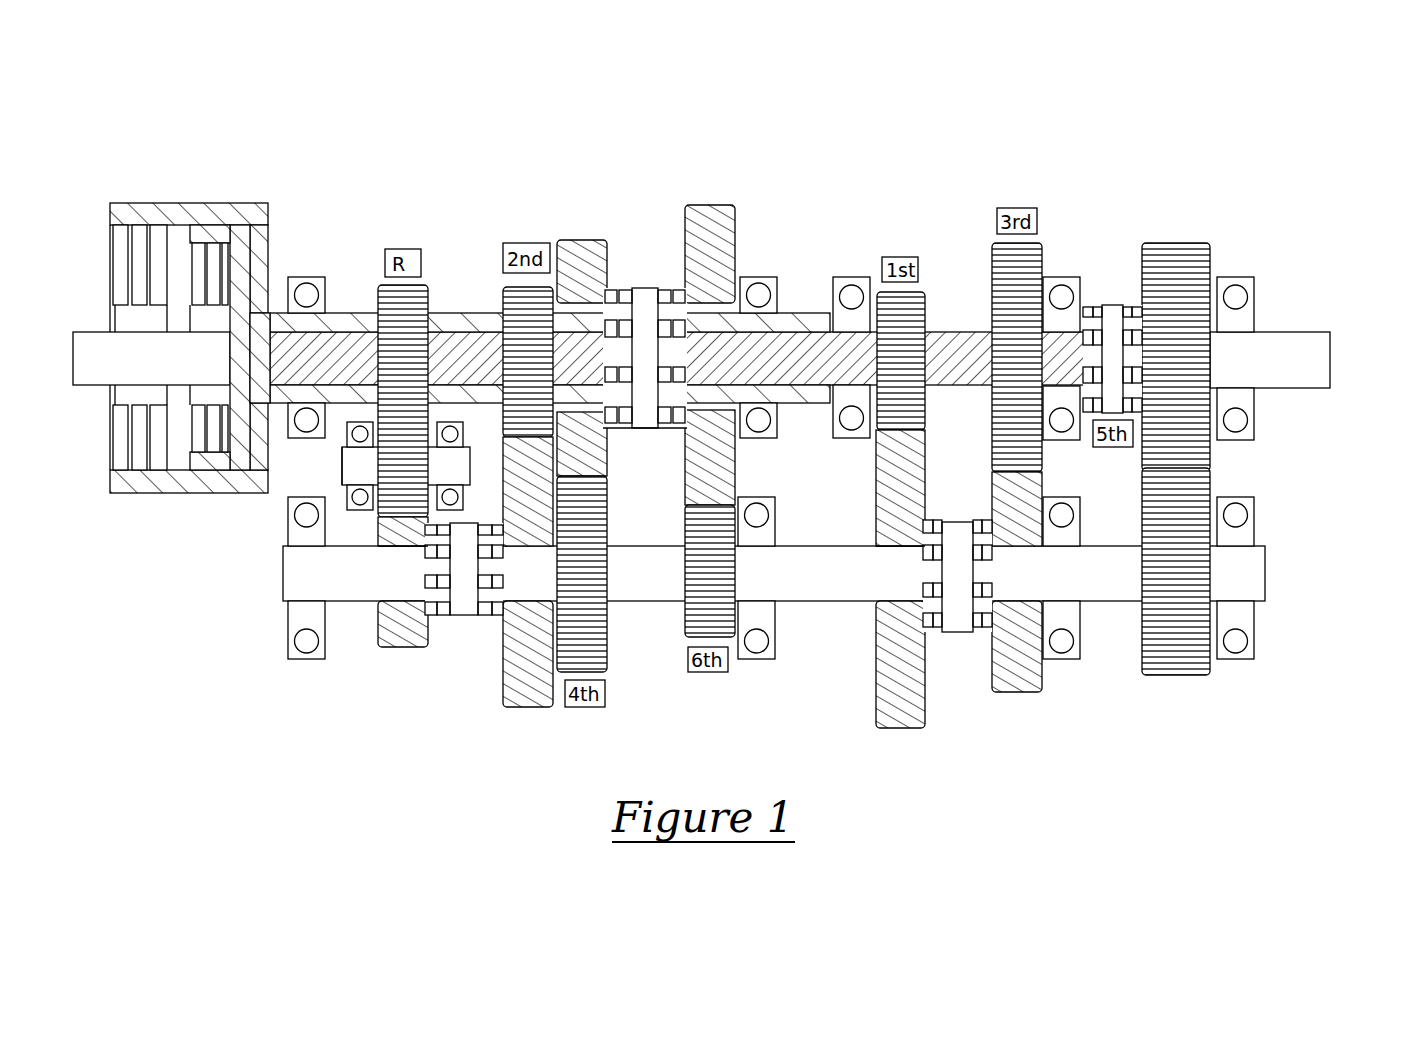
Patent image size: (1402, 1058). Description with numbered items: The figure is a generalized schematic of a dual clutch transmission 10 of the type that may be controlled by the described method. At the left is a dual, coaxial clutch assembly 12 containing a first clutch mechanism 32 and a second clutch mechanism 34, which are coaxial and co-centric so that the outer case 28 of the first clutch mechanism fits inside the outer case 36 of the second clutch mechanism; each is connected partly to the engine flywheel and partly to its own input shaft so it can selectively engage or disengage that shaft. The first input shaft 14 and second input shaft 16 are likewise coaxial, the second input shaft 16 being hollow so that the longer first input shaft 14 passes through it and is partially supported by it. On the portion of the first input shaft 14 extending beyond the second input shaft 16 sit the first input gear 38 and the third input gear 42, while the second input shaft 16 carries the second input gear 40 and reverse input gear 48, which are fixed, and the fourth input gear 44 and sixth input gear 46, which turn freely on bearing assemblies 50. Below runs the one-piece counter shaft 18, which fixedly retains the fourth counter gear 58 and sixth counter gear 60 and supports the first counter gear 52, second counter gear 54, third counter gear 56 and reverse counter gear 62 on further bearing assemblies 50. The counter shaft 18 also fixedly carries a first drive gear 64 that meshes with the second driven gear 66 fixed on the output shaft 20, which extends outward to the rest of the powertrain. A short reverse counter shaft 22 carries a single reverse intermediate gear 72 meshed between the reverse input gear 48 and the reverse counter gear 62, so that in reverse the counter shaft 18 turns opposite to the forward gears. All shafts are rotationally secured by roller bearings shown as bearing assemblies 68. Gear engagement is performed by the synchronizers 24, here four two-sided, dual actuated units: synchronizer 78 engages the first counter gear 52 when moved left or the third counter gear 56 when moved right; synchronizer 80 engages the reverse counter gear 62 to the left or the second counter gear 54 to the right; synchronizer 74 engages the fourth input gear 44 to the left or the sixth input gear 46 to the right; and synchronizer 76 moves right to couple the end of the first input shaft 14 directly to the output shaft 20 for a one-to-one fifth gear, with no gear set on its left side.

The dual clutch transmission 10 is at (497, 185).
The dual, coaxial clutch assembly 12 is at (211, 293).
The first input shaft 14 is at (963, 336).
The second input shaft 16 is at (326, 323).
The counter shaft 18 is at (292, 573).
The output shaft 20 is at (1332, 356).
The reverse counter shaft 22 is at (345, 470).
The synchronizers 24 is at (668, 276).
The outer case of the first clutch mechanism 28 is at (247, 262).
The first clutch mechanism 32 is at (215, 262).
The second clutch mechanism 34 is at (143, 255).
The outer case of the second clutch mechanism 36 is at (270, 235).
The first input gear 38 is at (932, 302).
The second input gear 40 is at (502, 300).
The third input gear 42 is at (1043, 250).
The fourth input gear 44 is at (601, 240).
The sixth input gear 46 is at (736, 226).
The reverse input gear 48 is at (432, 300).
The bearing assemblies 50 is at (1062, 543).
The first counter gear 52 is at (880, 652).
The second counter gear 54 is at (545, 696).
The third counter gear 56 is at (1005, 692).
The fourth counter gear 58 is at (606, 652).
The sixth counter gear 60 is at (684, 622).
The reverse counter gear 62 is at (384, 636).
The first drive gear 64 is at (1145, 652).
The second driven gear 66 is at (1190, 255).
The bearing assembly 68 is at (866, 278).
The reverse intermediate gear 72 is at (390, 462).
The synchronizer 74 is at (648, 290).
The synchronizer 76 is at (1112, 322).
The synchronizer 78 is at (955, 640).
The synchronizer 80 is at (465, 610).